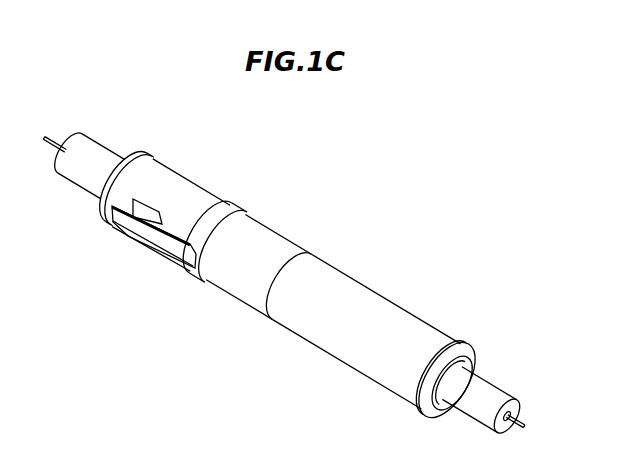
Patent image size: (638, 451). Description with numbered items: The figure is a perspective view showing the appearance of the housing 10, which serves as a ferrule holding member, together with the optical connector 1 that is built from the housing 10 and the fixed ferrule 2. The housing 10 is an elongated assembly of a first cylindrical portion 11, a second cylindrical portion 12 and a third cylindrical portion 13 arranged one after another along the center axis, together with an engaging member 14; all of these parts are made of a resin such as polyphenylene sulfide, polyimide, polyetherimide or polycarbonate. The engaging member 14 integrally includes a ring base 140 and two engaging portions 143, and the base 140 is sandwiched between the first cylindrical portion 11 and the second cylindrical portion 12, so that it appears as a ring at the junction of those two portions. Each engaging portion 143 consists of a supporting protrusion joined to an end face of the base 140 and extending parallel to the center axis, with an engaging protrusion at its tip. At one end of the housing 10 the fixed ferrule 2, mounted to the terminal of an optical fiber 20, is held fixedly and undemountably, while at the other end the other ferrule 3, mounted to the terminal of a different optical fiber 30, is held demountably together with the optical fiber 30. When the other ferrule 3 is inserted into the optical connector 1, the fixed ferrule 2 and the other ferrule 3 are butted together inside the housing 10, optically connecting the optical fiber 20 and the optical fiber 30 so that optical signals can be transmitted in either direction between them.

The optical connector 1 is at (463, 305).
The housing 10 is at (361, 212).
The first cylindrical portion 11 is at (194, 192).
The second cylindrical portion 12 is at (273, 238).
The third cylindrical portion 13 is at (320, 263).
The engaging member 14 is at (238, 210).
The ring base 140 is at (192, 268).
The engaging portions 143 is at (167, 247).
The fixed ferrule 2 is at (490, 389).
The optical fiber 20 is at (513, 420).
The other ferrule 3 is at (99, 157).
The optical fiber 30 is at (59, 149).